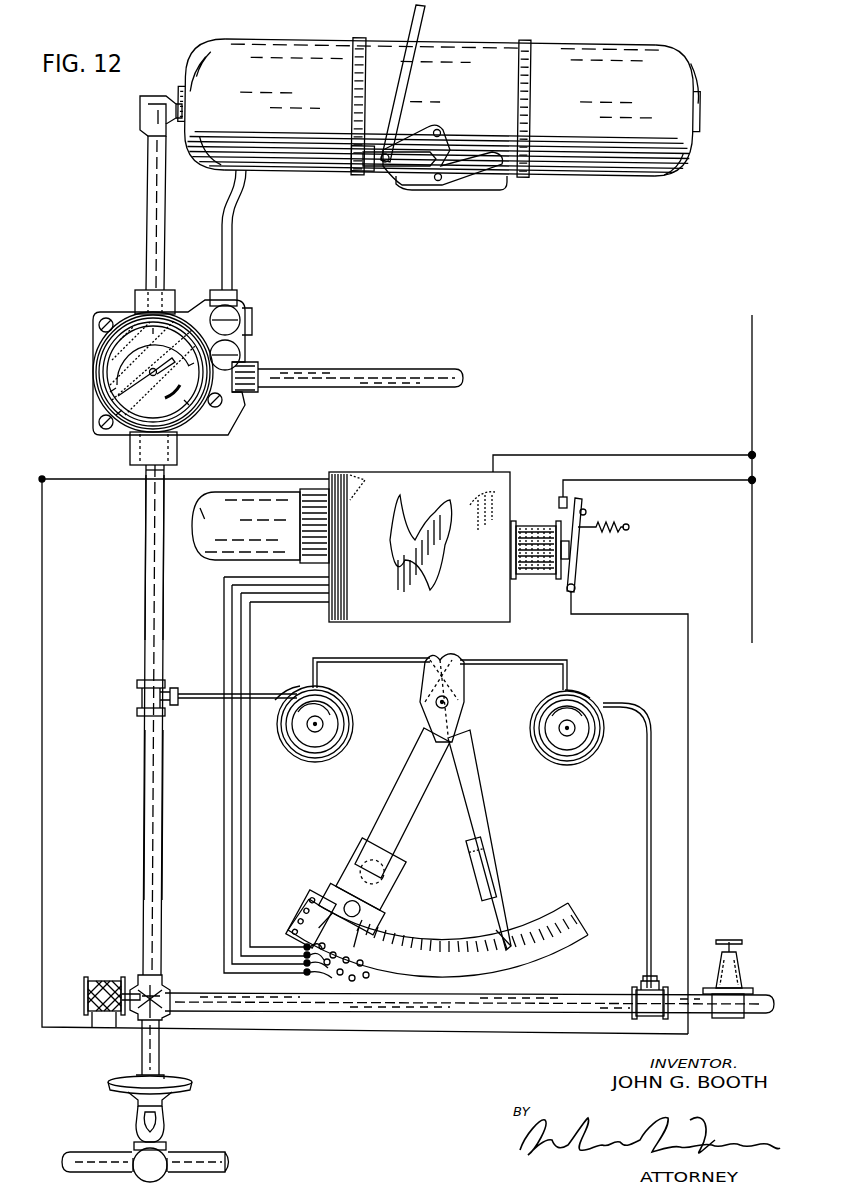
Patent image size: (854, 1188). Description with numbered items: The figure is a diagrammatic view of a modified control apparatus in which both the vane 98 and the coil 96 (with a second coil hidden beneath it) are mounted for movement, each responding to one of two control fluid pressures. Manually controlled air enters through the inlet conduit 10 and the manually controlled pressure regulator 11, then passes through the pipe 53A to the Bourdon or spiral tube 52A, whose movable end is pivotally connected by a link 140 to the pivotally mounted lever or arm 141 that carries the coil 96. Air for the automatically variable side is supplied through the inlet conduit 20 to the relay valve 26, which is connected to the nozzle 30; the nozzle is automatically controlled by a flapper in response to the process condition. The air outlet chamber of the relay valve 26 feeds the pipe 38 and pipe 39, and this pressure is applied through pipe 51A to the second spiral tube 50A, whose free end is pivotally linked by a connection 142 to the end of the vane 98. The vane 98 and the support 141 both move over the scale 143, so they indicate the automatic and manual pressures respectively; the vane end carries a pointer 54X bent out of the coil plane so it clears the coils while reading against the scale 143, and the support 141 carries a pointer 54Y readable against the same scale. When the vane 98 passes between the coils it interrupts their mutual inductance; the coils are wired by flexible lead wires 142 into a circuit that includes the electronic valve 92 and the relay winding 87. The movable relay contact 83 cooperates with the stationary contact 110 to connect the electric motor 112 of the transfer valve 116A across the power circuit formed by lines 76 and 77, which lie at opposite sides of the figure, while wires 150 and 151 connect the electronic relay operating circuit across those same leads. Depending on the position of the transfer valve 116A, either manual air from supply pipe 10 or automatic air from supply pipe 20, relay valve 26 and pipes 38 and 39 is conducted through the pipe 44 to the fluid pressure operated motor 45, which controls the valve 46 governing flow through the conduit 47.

The relay valve 26 is at (112, 292).
The nozzle 30 is at (412, 162).
The inlet conduit 20 is at (400, 369).
The electronic valve 92 is at (437, 451).
The power supply line 76 is at (752, 404).
The power supply line 77 is at (42, 477).
The wire 151 is at (579, 455).
The stationary contact 110 is at (562, 496).
The relay winding 87 is at (528, 526).
The movable relay contact 83 is at (578, 555).
The wire 150 is at (146, 486).
The pipe 38 is at (146, 550).
The pipe 39 is at (145, 807).
The connection / flexible lead wires 142 is at (366, 658).
The link 140 is at (508, 660).
The pipe 51A is at (212, 694).
The spiral or Bourdon tube 50A is at (335, 700).
The Bourdon or spiral tube 52A is at (580, 694).
The pipe 53A is at (650, 858).
The lever or arm (support) 141 is at (392, 790).
The vane 98 is at (482, 815).
The coil 96 is at (352, 860).
The pointer 54Y is at (310, 908).
The pointer 54X is at (505, 918).
The scale 143 is at (570, 912).
The transfer valve 116A is at (134, 984).
The electric motor 112 is at (90, 978).
The inlet conduit / supply pipe 10 is at (302, 1006).
The manually controlled pressure regulator 11 is at (730, 968).
The pipe 44 is at (142, 1056).
The fluid pressure operated motor 45 is at (108, 1082).
The valve 46 is at (134, 1155).
The conduit 47 is at (205, 1162).